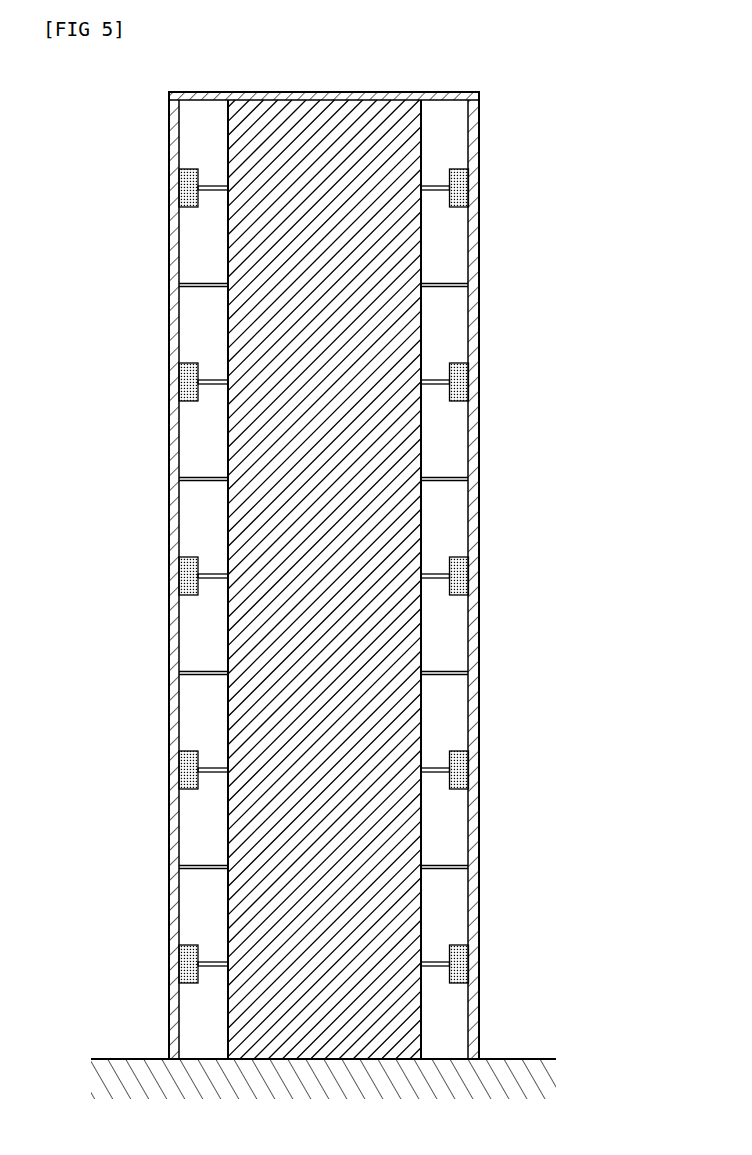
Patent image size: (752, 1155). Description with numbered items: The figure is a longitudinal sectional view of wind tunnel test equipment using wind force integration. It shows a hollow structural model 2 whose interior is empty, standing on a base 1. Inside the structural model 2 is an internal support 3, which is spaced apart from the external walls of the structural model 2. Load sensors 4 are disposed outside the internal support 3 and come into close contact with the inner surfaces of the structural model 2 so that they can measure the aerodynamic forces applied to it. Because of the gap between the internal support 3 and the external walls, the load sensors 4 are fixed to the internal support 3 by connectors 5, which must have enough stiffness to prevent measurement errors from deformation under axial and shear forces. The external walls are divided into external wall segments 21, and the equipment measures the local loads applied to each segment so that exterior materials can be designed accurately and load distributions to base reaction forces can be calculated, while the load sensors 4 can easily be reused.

The ground 1 is at (527, 1057).
The structural model 2 is at (132, 257).
The external wall segments 21 is at (480, 252).
The internal support 3 is at (227, 905).
The load sensors 4 is at (188, 556).
The connectors 5 is at (212, 583).